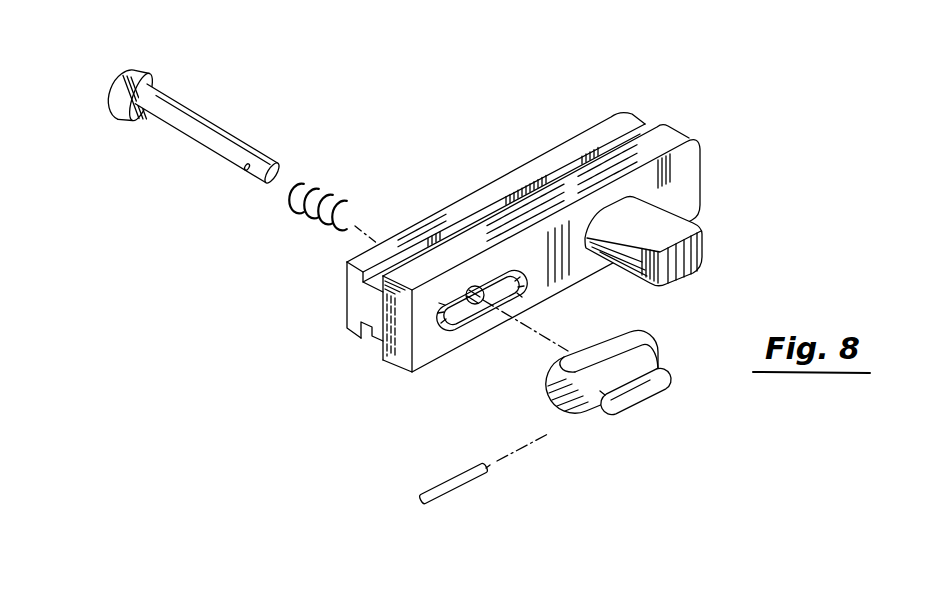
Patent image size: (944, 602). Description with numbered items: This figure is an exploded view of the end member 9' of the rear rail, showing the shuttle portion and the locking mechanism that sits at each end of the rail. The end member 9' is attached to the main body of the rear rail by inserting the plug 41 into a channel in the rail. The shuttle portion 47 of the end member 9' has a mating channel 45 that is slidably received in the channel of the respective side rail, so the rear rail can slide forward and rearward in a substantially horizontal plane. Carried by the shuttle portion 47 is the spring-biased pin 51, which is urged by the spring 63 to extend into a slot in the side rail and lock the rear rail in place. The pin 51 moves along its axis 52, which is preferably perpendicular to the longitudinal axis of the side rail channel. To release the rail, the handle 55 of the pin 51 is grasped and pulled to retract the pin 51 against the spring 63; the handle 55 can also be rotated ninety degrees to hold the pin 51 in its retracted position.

The end member 9' is at (467, 263).
The plug 41 is at (657, 222).
The mating channel 45 is at (363, 306).
The shuttle portion 47 is at (607, 172).
The spring-biased pin 51 is at (207, 133).
The axis of the pin 52 is at (553, 343).
The handle 55 is at (648, 394).
The spring 63 is at (325, 185).